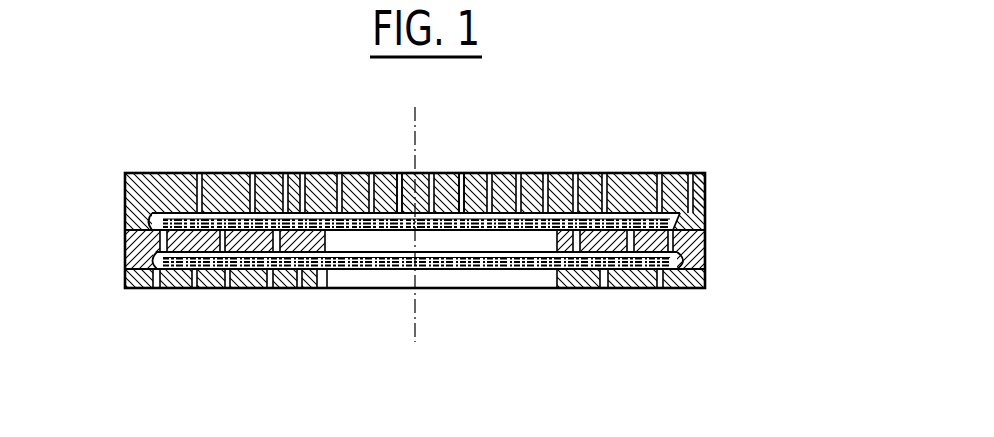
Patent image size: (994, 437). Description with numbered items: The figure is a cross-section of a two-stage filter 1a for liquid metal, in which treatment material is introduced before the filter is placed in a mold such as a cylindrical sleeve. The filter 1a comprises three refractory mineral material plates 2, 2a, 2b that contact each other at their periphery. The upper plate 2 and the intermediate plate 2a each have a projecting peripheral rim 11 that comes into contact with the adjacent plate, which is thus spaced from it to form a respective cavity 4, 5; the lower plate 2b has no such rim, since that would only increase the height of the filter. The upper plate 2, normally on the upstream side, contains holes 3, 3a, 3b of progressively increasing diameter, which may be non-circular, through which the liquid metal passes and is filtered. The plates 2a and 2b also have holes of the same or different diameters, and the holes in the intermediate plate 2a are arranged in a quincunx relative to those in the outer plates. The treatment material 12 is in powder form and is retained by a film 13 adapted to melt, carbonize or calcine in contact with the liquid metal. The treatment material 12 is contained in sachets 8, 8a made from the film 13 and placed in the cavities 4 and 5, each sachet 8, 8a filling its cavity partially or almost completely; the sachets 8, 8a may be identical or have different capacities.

The filter 1a is at (728, 222).
The plate 2 is at (125, 213).
The plate 2a is at (125, 248).
The plate 2b is at (125, 275).
The hole 3 is at (250, 173).
The hole 3a is at (458, 173).
The hole 3b is at (408, 173).
The cavity 4 is at (685, 173).
The cavity 5 is at (172, 258).
The sachet 8 is at (440, 214).
The sachet 8a is at (489, 249).
The peripheral rim 11 is at (690, 220).
The treatment material 12 is at (286, 173).
The film 13 is at (340, 173).